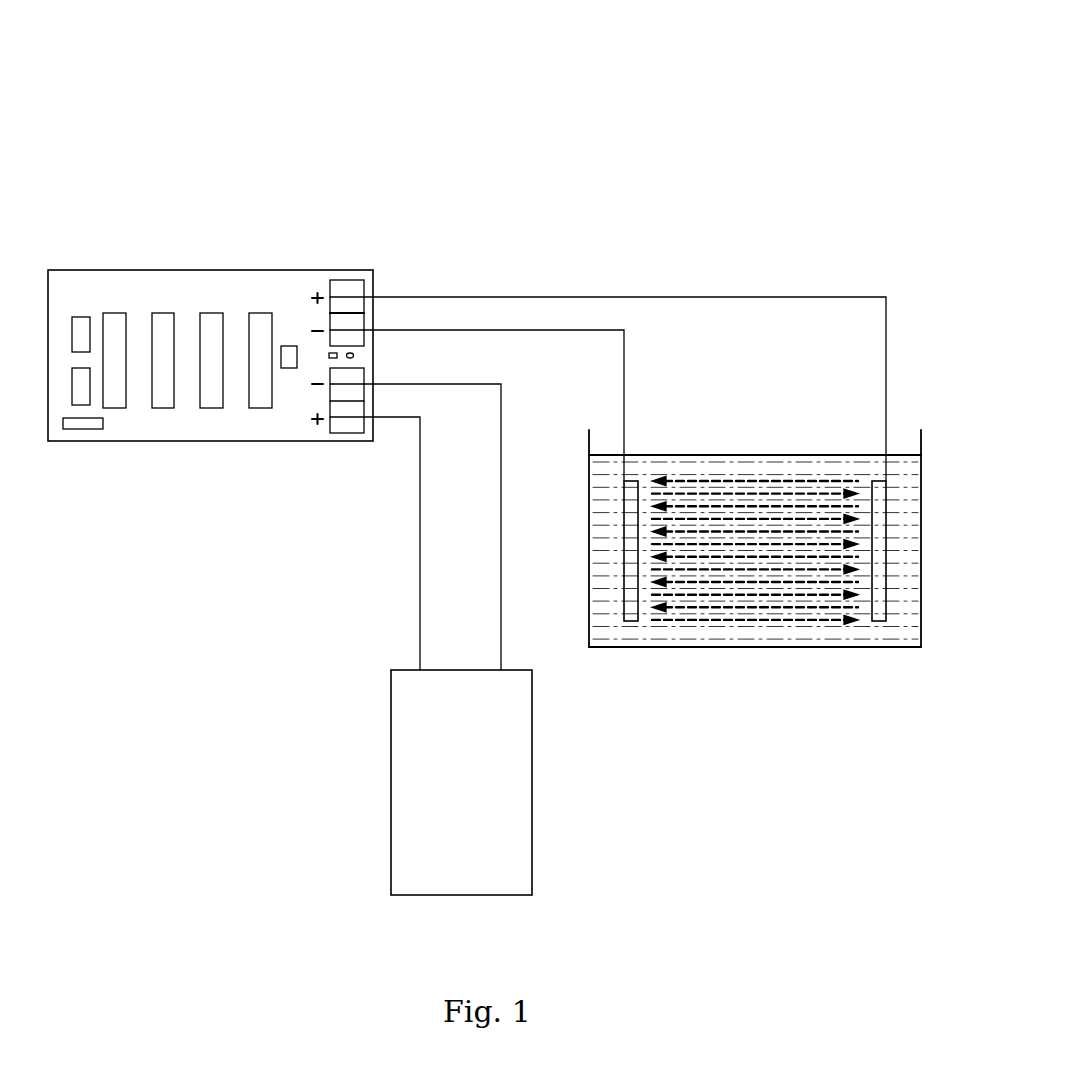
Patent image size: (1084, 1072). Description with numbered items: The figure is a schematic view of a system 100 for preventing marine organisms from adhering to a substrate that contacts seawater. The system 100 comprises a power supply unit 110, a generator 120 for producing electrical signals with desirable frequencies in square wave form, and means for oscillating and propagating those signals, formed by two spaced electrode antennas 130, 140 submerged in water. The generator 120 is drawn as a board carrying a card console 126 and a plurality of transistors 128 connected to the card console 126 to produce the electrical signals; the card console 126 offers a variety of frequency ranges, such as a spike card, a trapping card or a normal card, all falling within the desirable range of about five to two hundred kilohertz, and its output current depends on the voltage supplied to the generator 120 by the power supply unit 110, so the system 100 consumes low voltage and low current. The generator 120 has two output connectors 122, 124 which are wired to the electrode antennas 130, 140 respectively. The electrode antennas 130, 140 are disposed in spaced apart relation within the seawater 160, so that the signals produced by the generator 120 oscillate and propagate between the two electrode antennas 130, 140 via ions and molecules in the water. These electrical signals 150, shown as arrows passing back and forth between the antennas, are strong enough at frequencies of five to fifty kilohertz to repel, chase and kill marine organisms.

The system 100 is at (705, 125).
The power supply unit 110 is at (440, 798).
The generator 120 is at (311, 340).
The output connector 122 is at (353, 338).
The output connector 124 is at (350, 309).
The card console 126 is at (80, 424).
The transistors 128 is at (262, 322).
The electrode antenna 130 is at (633, 590).
The electrode antenna 140 is at (880, 587).
The electrical signals 150 is at (741, 620).
The seawater 160 is at (892, 468).